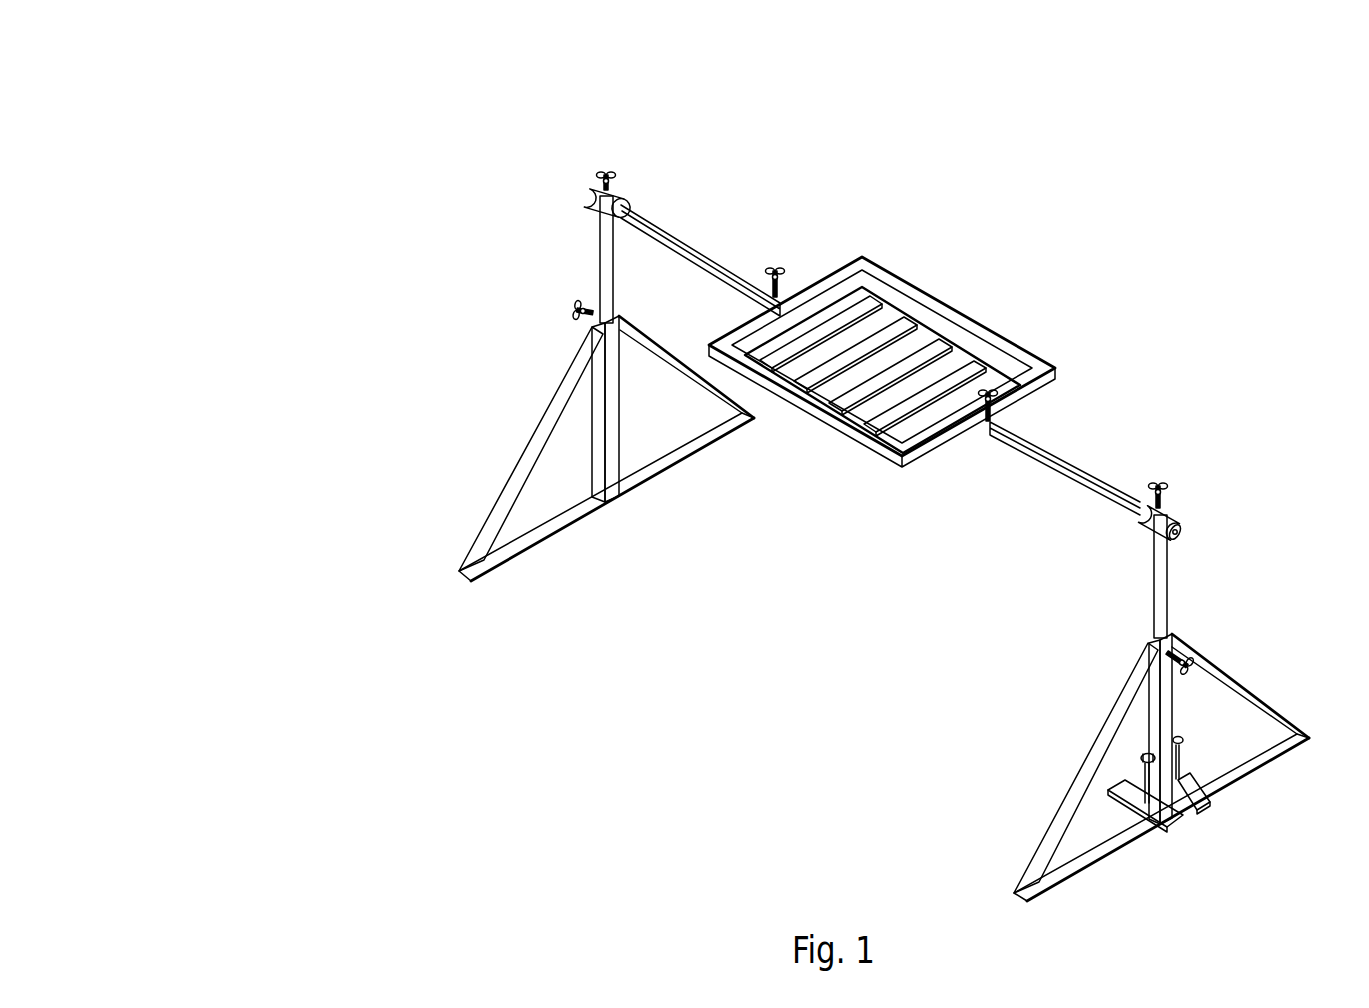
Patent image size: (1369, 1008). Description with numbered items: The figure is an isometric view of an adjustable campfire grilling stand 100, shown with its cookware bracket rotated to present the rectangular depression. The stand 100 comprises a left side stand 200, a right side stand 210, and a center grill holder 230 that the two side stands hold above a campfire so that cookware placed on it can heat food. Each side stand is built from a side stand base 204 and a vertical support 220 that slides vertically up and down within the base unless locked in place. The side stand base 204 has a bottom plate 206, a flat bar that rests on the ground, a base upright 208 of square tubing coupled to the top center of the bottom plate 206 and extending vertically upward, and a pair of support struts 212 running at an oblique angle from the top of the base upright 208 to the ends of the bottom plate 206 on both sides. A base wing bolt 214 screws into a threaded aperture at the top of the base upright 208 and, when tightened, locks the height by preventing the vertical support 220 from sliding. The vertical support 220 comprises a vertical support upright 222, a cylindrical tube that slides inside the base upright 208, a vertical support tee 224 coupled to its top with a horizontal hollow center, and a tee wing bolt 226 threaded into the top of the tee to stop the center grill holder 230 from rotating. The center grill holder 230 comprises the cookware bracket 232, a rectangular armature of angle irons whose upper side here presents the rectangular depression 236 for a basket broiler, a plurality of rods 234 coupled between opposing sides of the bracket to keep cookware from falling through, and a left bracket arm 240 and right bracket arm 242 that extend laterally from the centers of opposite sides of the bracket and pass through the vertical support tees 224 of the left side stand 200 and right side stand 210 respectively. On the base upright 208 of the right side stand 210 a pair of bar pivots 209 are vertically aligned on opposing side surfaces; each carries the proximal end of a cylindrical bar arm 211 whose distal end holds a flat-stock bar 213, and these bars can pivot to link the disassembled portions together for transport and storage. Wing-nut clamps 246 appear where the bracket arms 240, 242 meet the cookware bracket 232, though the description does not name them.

The adjustable campfire grilling stand 100 is at (288, 218).
The left side stand 200 is at (778, 447).
The side stand base 204 is at (438, 353).
The bottom plate 206 is at (688, 457).
The base upright 208 is at (615, 435).
The bar pivot 209 is at (1141, 755).
The right side stand 210 is at (1325, 783).
The bar arm 211 is at (1179, 766).
The support struts 212 is at (663, 360).
The bar 213 is at (1137, 795).
The base wing bolt 214 is at (573, 308).
The vertical support 220 is at (440, 147).
The vertical support upright 222 is at (610, 257).
The vertical support tee 224 is at (588, 195).
The tee wing bolt 226 is at (603, 166).
The center grill holder 230 is at (1163, 397).
The cookware bracket 232 is at (1055, 380).
The rods 234 is at (878, 392).
The rectangular depression 236 is at (853, 273).
The left bracket arm 240 is at (680, 247).
The right bracket arm 242 is at (1038, 455).
The wing nut clamp 246 is at (772, 265).